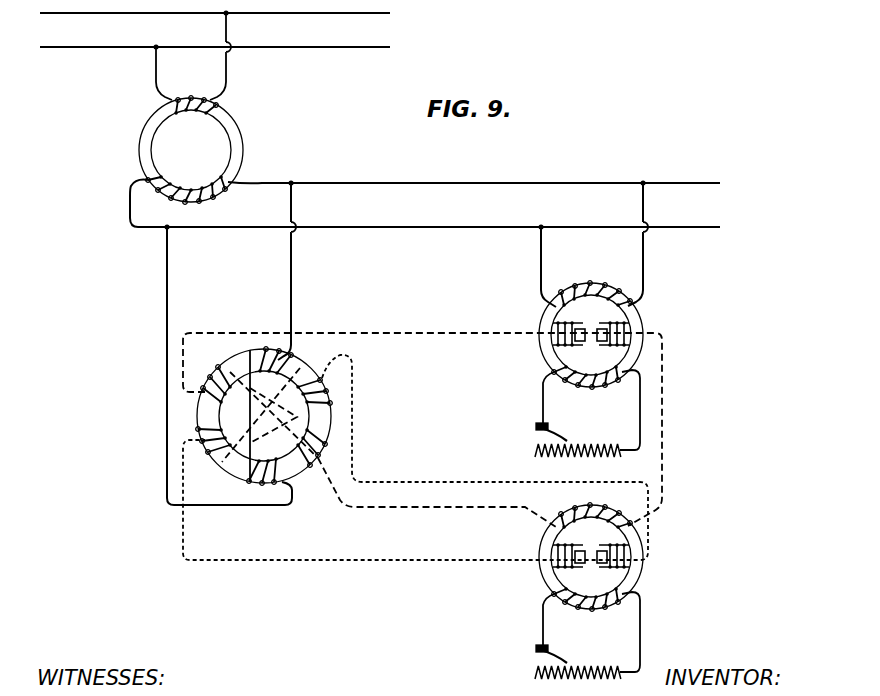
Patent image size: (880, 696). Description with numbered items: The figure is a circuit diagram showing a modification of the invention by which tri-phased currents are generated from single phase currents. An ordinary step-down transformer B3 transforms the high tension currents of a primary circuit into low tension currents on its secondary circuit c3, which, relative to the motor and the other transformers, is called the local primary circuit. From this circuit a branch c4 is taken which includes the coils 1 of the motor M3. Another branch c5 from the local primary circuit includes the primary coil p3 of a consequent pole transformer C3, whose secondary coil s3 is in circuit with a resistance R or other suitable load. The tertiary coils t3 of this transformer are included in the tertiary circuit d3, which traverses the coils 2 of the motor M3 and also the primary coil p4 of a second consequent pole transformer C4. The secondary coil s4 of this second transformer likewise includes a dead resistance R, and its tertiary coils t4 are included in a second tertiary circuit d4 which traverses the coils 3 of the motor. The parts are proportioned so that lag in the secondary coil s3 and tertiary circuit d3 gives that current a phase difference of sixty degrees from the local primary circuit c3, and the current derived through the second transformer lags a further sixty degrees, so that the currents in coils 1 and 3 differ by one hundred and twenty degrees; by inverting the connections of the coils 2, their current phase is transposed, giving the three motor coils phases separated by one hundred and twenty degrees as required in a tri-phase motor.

The step-down transformer B3 is at (191, 150).
The local primary circuit c3 is at (425, 243).
The branch c4 is at (282, 285).
The branch c5 is at (554, 267).
The motor M3 is at (264, 418).
The motor coils 1 is at (270, 416).
The motor coils 2 is at (264, 418).
The motor coils 3 is at (264, 420).
The tertiary circuit d3 is at (443, 420).
The second tertiary circuit d4 is at (415, 472).
The consequent pole transformer C3 is at (577, 328).
The primary coil p3 is at (594, 281).
The secondary coil s3 is at (586, 388).
The tertiary coils t3 is at (591, 344).
The second consequent pole transformer C4 is at (577, 555).
The primary coil p4 is at (592, 499).
The secondary coil s4 is at (586, 612).
The tertiary coils t4 is at (591, 566).
The resistance R is at (587, 524).